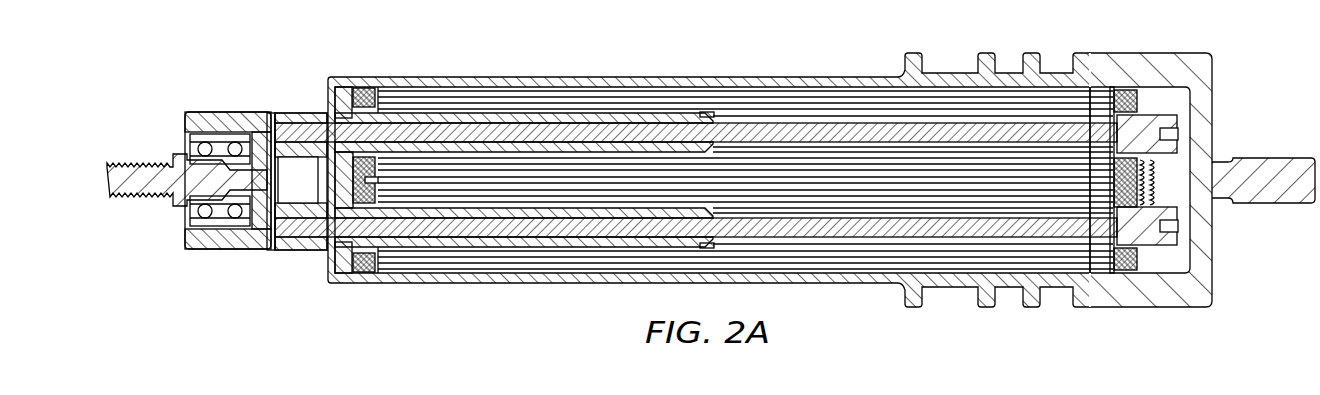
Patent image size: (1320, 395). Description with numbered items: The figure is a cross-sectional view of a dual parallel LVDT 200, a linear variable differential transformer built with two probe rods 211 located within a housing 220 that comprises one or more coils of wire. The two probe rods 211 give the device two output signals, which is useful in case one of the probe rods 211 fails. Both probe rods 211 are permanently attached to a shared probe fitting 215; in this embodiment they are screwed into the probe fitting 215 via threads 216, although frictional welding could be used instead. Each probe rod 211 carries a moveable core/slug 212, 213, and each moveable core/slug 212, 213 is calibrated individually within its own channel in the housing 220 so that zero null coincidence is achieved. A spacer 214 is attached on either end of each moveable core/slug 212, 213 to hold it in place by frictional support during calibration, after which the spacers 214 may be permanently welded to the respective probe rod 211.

The dual parallel LVDT 200 is at (178, 69).
The probe rod 211 is at (493, 118).
The moveable core/slug 212 is at (806, 128).
The moveable core/slug 213 is at (828, 230).
The spacer 214 is at (702, 122).
The probe fitting 215 is at (290, 112).
The threads 216 is at (290, 250).
The housing 220 is at (523, 84).